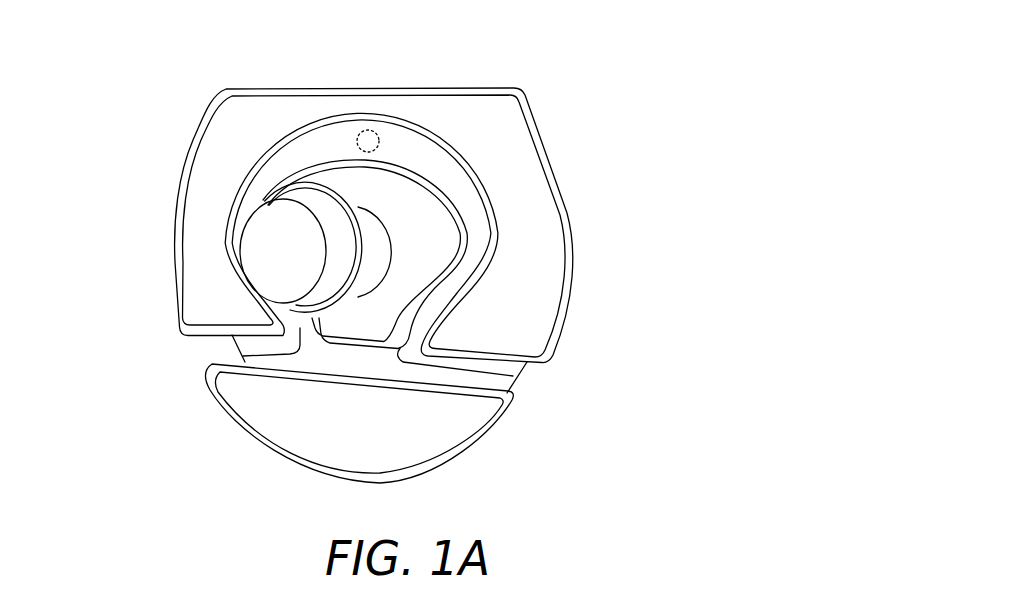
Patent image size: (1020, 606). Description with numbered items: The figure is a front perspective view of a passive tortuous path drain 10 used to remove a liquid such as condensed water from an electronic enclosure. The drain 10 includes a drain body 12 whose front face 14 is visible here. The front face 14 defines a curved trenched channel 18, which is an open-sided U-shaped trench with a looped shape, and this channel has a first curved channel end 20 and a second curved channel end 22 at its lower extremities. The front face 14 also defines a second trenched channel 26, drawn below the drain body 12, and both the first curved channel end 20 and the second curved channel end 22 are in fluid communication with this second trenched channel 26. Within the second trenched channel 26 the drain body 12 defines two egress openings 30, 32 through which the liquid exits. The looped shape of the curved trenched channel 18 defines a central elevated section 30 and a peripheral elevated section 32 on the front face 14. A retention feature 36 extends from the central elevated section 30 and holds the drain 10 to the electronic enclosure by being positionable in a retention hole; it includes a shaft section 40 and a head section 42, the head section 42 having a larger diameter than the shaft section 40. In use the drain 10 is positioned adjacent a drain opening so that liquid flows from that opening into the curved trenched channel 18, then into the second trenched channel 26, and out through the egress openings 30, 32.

The passive tortuous path drain 10 is at (583, 93).
The drain body 12 is at (223, 125).
The front face 14 is at (223, 273).
The curved trenched channel 18 is at (267, 178).
The first curved channel end 20 is at (243, 362).
The second curved channel end 22 is at (525, 380).
The second trenched channel 26 is at (323, 362).
The egress opening / central elevated section 30 is at (210, 345).
The egress opening / peripheral elevated section 32 is at (530, 191).
The retention feature 36 is at (260, 225).
The shaft section 40 is at (368, 222).
The head section 42 is at (302, 257).